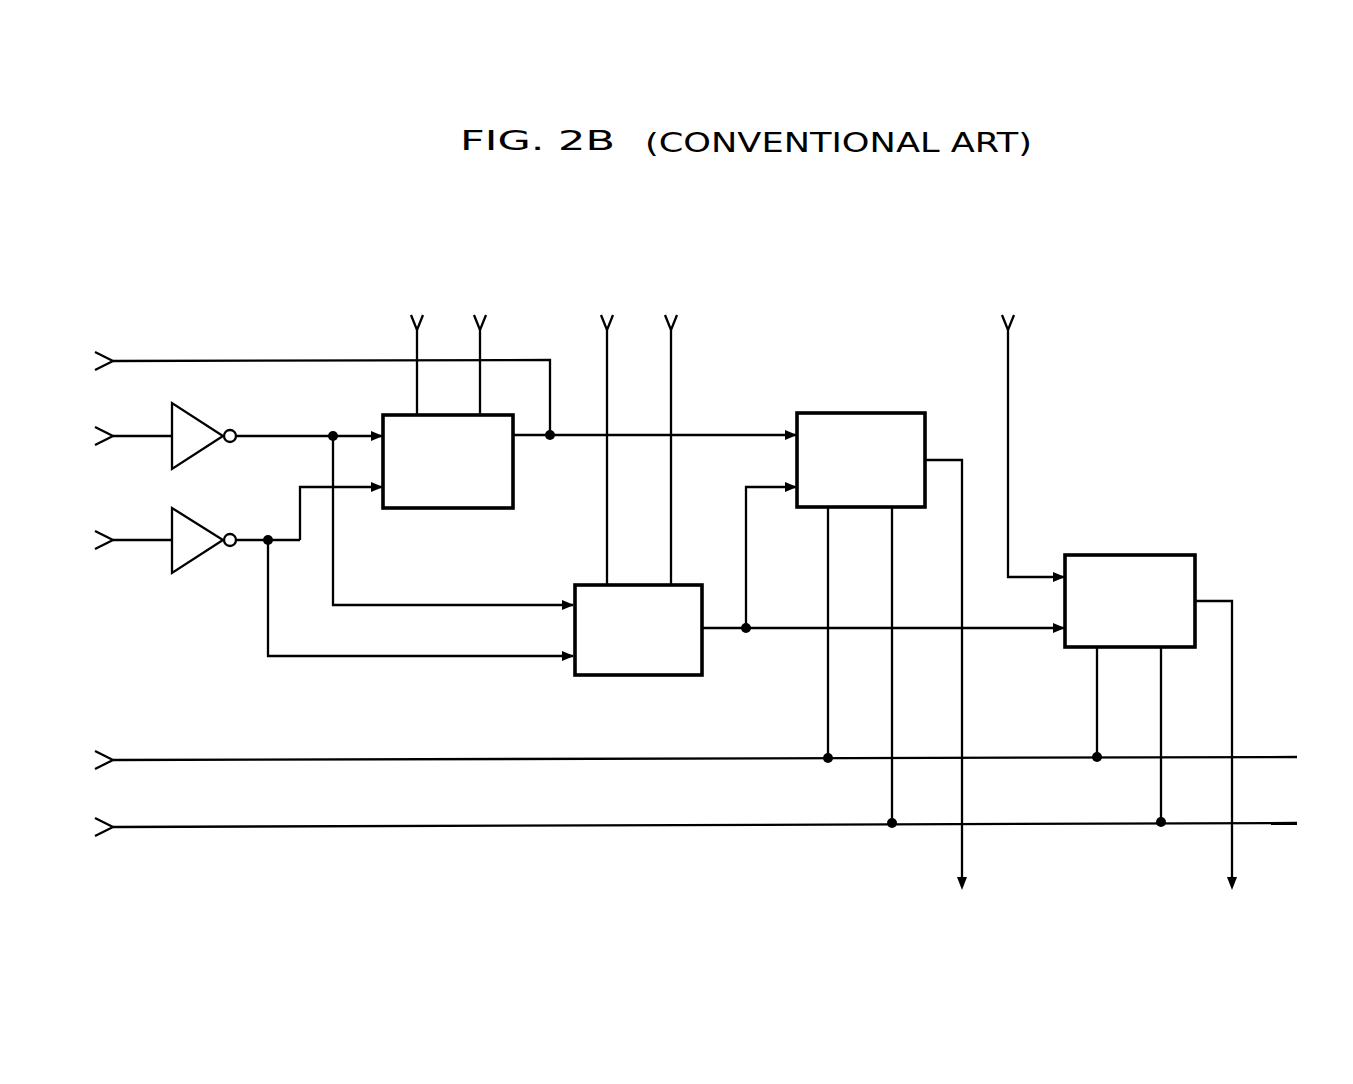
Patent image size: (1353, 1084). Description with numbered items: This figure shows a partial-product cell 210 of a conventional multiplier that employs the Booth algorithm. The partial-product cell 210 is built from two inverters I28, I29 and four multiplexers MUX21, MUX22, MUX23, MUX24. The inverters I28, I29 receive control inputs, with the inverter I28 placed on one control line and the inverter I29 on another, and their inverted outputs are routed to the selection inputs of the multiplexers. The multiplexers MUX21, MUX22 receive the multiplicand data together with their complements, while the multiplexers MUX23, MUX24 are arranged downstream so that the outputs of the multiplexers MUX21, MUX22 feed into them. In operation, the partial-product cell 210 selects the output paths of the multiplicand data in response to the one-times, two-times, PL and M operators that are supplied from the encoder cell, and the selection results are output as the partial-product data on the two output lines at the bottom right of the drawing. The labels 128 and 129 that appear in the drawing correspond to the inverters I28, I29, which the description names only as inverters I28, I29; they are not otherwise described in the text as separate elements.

The partial-product cell 210 is at (1242, 295).
The inverter I28 128 is at (218, 423).
The inverter I29 129 is at (218, 528).
The inverter I28 is at (212, 418).
The inverter I29 is at (212, 523).
The multiplexer MUX21 is at (447, 509).
The multiplexer MUX22 is at (637, 676).
The multiplexer MUX23 is at (861, 413).
The multiplexer MUX24 is at (1130, 555).